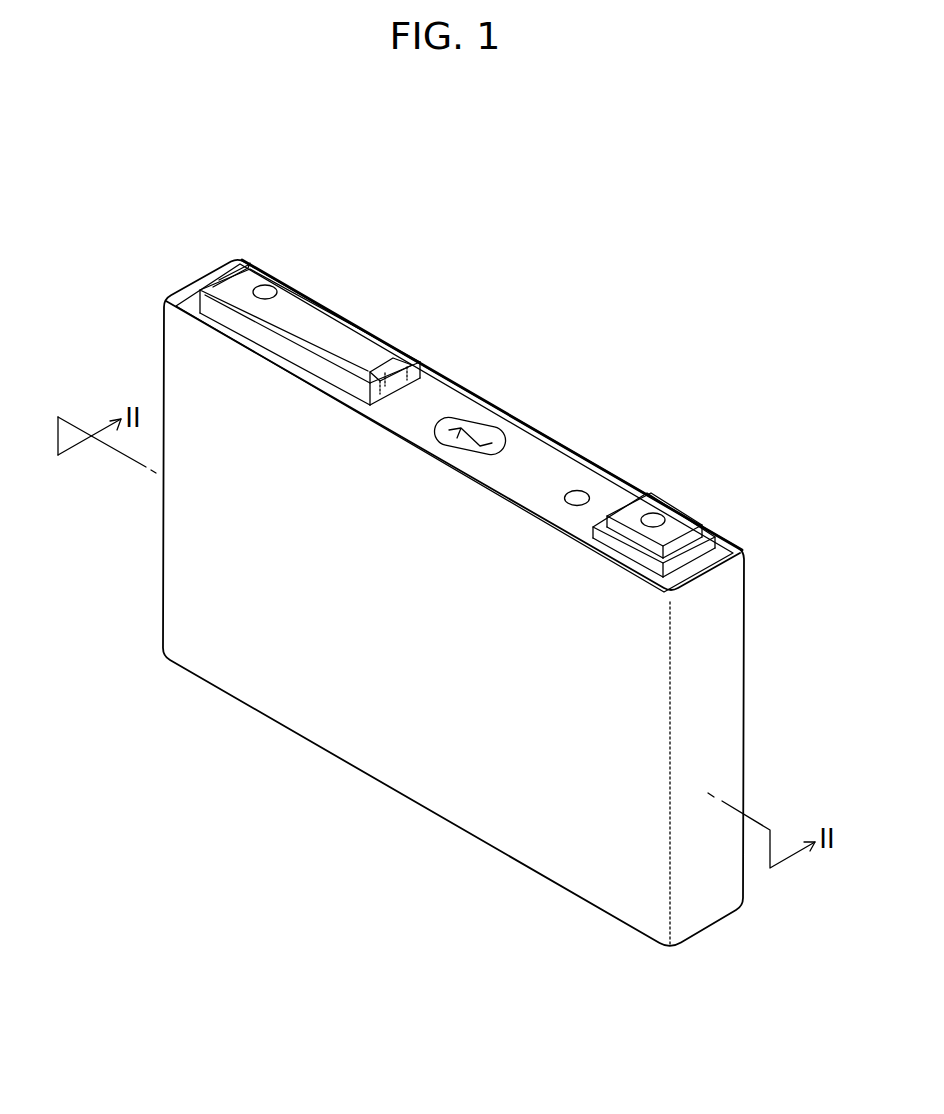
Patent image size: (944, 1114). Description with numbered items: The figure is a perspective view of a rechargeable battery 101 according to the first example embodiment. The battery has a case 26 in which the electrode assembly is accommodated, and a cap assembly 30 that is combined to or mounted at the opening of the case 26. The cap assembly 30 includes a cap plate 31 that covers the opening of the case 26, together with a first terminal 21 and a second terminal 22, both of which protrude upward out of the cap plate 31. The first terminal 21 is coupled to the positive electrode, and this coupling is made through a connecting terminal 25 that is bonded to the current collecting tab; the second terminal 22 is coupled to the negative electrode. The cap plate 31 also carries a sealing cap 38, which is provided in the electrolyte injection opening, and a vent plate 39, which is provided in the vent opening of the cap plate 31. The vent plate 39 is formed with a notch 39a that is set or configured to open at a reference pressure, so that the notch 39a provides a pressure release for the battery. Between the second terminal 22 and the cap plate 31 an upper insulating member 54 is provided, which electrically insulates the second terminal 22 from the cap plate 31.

The rechargeable battery 101 is at (477, 223).
The first terminal 21 is at (681, 524).
The second terminal 22 is at (310, 310).
The connecting terminal 25 is at (267, 292).
The case 26 is at (396, 757).
The cap assembly 30 is at (553, 444).
The cap plate 31 is at (428, 395).
The sealing cap 38 is at (580, 494).
The vent plate 39 is at (468, 417).
The notch 39a is at (482, 445).
The upper insulating member 54 is at (377, 332).